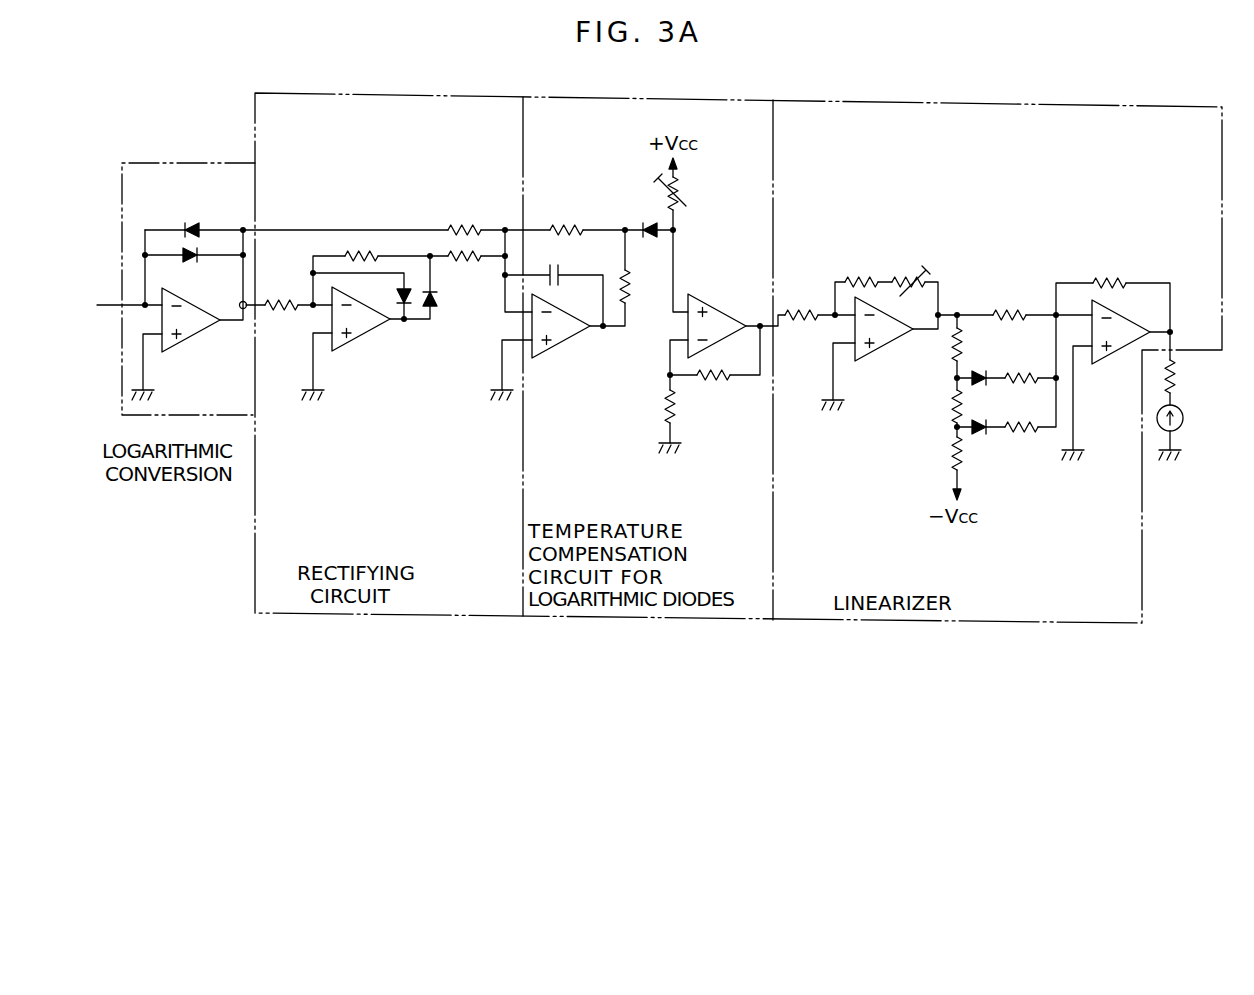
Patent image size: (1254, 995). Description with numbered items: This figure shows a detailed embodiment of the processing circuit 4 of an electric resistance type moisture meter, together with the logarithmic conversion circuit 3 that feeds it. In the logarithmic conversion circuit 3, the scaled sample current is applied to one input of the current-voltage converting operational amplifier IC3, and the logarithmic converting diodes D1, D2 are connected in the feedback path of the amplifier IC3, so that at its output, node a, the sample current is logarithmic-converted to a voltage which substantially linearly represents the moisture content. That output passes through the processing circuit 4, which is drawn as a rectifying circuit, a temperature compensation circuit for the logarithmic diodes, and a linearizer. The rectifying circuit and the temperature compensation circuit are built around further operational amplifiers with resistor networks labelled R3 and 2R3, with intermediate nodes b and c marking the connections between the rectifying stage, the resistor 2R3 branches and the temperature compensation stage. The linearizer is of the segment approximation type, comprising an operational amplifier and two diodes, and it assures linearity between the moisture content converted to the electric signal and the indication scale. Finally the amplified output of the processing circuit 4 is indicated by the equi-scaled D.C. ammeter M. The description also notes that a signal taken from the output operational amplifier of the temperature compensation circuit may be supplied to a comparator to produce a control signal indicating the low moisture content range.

The logarithmic conversion circuit 3 is at (176, 336).
The processing circuit 4 is at (1085, 107).
The logarithmic converting diode D1 is at (196, 270).
The logarithmic converting diode D2 is at (194, 218).
The current-voltage converting operational amplifier IC3 is at (191, 320).
The resistor R3 is at (461, 276).
The resistor 2R3 is at (465, 224).
The node a is at (236, 306).
The node b is at (427, 246).
The node c is at (624, 220).
The equi-scaled D.C. ammeter M is at (1183, 428).